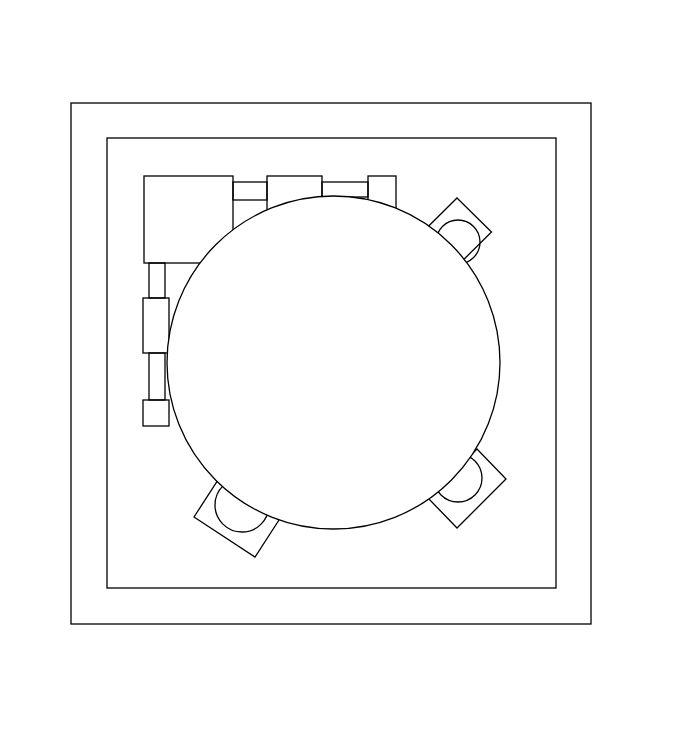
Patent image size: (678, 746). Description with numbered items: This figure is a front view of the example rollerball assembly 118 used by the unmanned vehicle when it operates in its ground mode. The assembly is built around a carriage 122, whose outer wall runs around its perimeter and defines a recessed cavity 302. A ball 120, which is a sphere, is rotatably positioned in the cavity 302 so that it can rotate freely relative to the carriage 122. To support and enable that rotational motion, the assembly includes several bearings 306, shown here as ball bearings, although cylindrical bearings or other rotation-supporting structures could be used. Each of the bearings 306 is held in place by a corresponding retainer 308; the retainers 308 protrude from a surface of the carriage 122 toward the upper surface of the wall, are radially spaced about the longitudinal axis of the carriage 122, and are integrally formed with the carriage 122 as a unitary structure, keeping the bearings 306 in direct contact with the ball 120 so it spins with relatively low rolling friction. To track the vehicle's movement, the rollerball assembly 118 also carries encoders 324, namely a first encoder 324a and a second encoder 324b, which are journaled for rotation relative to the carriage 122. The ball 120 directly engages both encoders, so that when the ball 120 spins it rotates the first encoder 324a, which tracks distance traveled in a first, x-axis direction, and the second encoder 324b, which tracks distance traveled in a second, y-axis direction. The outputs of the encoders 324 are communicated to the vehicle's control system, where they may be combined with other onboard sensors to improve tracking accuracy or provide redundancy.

The rollerball assembly 118 is at (311, 32).
The carriage 122 is at (70, 417).
The cavity 302 is at (545, 329).
The ball 120 is at (203, 438).
The bearings 306 is at (475, 252).
The retainers 308 is at (487, 237).
The encoders 324 is at (198, 249).
The first encoder 324a is at (150, 318).
The second encoder 324b is at (290, 182).